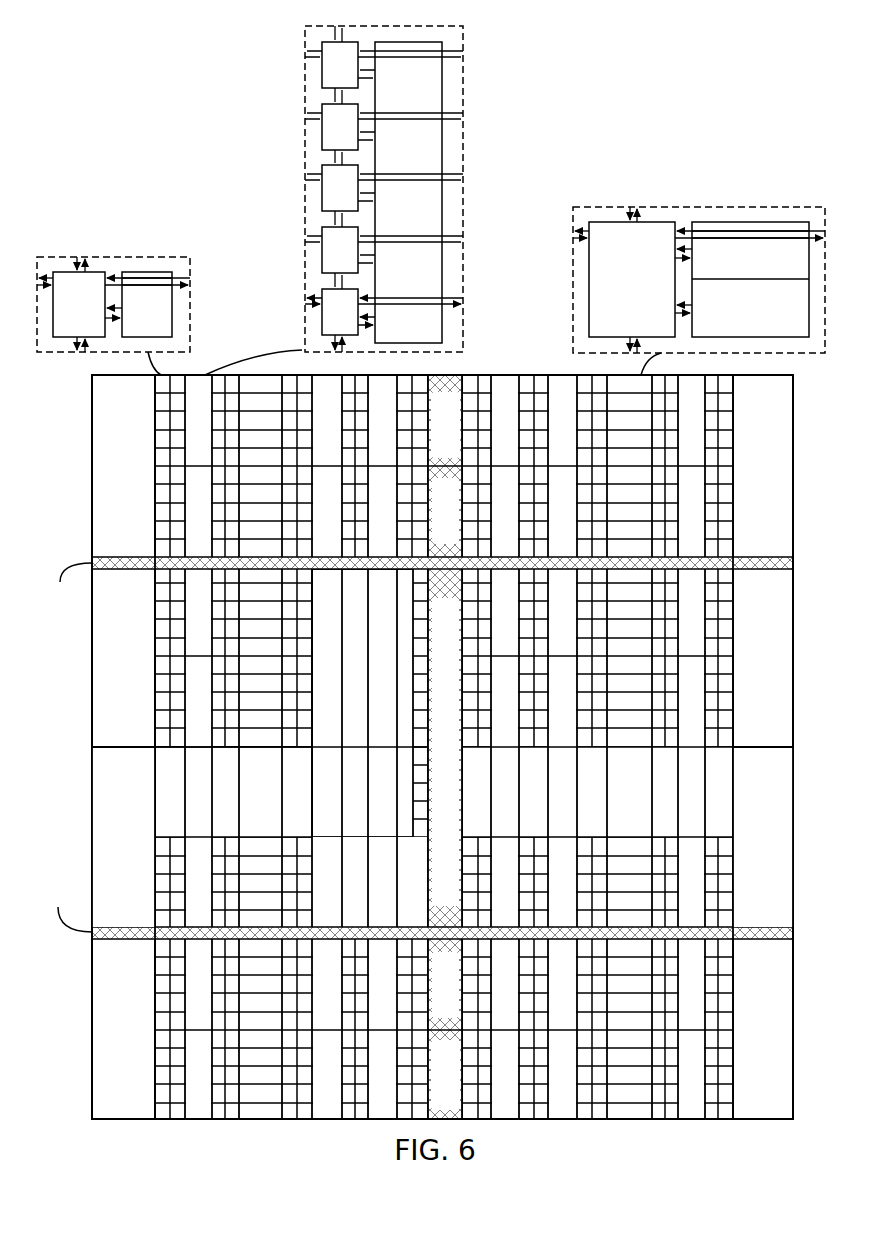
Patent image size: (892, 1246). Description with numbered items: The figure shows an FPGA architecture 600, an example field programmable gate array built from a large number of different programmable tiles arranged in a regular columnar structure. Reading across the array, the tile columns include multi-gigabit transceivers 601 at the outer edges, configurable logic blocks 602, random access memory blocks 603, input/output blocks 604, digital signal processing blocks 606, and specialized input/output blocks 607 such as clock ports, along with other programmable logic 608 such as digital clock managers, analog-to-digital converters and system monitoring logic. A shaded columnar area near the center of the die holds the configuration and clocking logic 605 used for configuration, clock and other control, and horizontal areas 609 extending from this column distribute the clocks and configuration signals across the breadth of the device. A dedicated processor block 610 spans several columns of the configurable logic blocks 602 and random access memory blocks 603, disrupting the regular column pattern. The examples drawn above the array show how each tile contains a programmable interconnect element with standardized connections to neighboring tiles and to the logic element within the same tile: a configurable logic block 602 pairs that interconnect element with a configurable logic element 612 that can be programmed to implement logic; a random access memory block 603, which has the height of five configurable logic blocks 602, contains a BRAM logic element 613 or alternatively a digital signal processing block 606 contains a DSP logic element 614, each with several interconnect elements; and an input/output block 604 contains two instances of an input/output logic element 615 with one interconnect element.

The FPGA architecture 600 is at (746, 41).
The multi-gigabit transceivers 601 is at (442, 747).
The configurable logic blocks 602 is at (382, 570).
The random access memory blocks 603 is at (441, 476).
The input/output blocks 604 is at (538, 501).
The configuration and clocking logic 605 is at (442, 747).
The digital signal processing blocks 606 is at (562, 792).
The specialized input/output blocks 607 is at (445, 748).
The other programmable logic 608 is at (446, 1075).
The horizontal areas 609 is at (72, 747).
The processor block 610 is at (362, 703).
The configurable logic element 612 is at (147, 304).
The BRAM logic element 613 is at (408, 192).
The DSP logic element 614 is at (408, 212).
The input/output logic element 615 is at (750, 279).